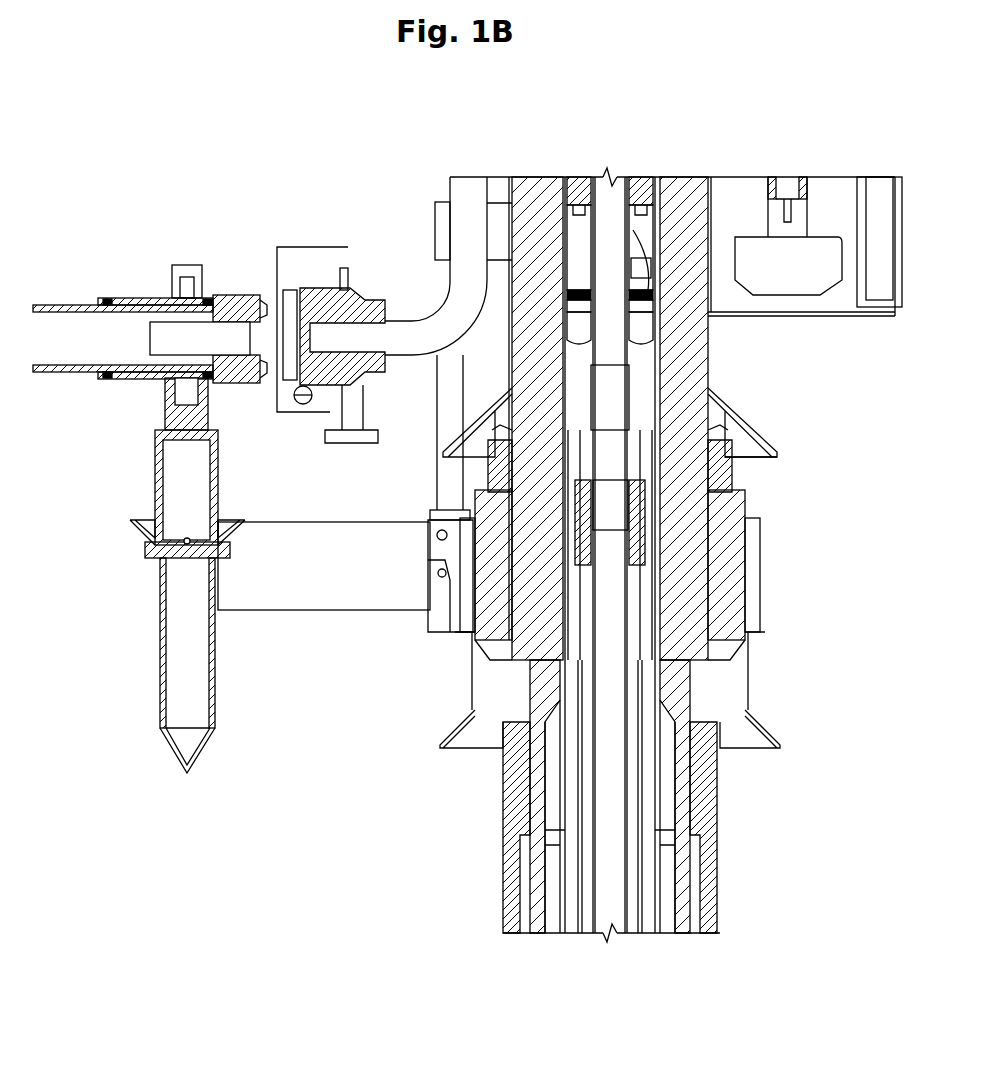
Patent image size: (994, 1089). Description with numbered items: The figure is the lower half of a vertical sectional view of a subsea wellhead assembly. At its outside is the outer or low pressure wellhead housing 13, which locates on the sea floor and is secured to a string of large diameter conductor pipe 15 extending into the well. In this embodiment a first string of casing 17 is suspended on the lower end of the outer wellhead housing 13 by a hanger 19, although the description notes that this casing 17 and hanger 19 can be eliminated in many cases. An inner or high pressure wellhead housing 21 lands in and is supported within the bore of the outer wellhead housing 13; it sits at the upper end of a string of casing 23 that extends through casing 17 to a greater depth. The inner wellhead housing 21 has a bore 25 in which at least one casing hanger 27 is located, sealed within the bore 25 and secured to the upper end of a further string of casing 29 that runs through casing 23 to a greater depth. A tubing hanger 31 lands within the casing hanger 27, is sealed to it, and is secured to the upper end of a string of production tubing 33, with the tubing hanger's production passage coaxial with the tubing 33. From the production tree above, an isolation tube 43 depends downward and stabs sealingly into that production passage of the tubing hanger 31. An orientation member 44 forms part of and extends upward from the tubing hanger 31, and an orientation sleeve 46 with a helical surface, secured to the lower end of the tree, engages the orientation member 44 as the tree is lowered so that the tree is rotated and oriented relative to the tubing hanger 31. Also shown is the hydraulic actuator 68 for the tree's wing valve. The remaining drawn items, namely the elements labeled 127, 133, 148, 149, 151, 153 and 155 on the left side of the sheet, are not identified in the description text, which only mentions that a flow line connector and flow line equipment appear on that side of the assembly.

The outer wellhead housing 13 is at (728, 592).
The conductor pipe 15 is at (722, 876).
The first string of casing 17 is at (725, 845).
The hanger 19 is at (725, 762).
The inner wellhead housing 21 is at (708, 410).
The string of casing 23 is at (565, 843).
The bore 25 is at (652, 372).
The casing hanger 27 is at (655, 578).
The string of casing 29 is at (650, 900).
The tubing hanger 31 is at (577, 390).
The production tubing 33 is at (593, 905).
The isolation tube 43 is at (643, 330).
The orientation member 44 is at (640, 258).
The orientation sleeve 46 is at (643, 220).
The hydraulic actuator 68 is at (815, 211).
The wings 127 is at (130, 525).
The arm 133 is at (352, 522).
The skirt 148 is at (770, 440).
The elbow tube 149 is at (437, 327).
The fitting 151 is at (355, 275).
The pipe connector 153 is at (237, 297).
The probe housing 155 is at (155, 455).